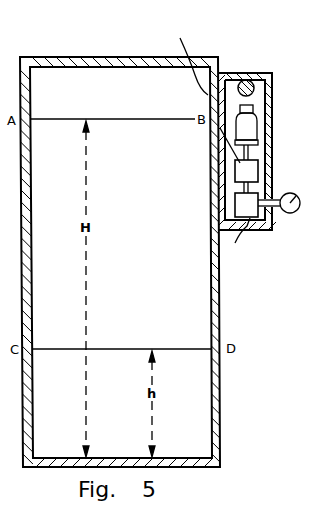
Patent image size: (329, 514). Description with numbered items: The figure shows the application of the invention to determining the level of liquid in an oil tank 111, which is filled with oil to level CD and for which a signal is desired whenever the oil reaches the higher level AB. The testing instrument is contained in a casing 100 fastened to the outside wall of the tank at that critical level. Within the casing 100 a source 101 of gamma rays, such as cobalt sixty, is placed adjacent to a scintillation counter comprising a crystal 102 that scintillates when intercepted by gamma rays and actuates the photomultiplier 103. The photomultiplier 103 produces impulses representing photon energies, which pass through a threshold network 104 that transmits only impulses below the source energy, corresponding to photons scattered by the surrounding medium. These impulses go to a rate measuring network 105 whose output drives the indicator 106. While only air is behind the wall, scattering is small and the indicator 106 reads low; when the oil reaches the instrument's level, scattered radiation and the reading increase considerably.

The casing 100 is at (233, 73).
The source of gamma rays 101 is at (247, 73).
The crystal 102 is at (248, 105).
The photomultiplier 103 is at (246, 126).
The threshold network 104 is at (236, 171).
The rate measuring network 105 is at (244, 206).
The indicator 106 is at (290, 213).
The oil tank 111 is at (203, 387).